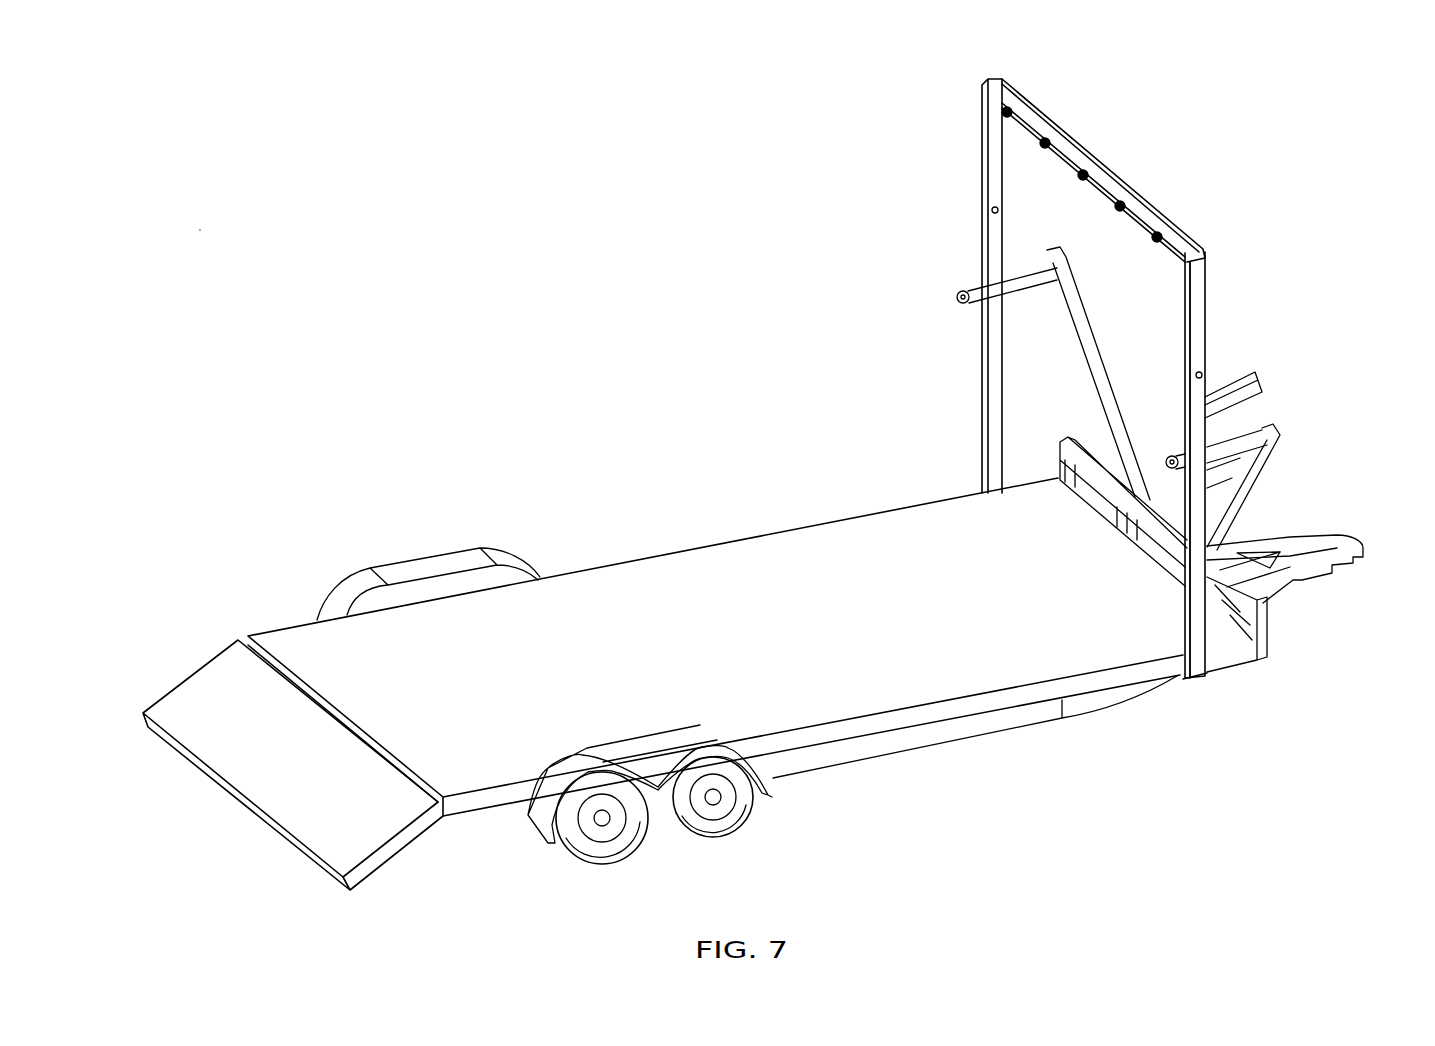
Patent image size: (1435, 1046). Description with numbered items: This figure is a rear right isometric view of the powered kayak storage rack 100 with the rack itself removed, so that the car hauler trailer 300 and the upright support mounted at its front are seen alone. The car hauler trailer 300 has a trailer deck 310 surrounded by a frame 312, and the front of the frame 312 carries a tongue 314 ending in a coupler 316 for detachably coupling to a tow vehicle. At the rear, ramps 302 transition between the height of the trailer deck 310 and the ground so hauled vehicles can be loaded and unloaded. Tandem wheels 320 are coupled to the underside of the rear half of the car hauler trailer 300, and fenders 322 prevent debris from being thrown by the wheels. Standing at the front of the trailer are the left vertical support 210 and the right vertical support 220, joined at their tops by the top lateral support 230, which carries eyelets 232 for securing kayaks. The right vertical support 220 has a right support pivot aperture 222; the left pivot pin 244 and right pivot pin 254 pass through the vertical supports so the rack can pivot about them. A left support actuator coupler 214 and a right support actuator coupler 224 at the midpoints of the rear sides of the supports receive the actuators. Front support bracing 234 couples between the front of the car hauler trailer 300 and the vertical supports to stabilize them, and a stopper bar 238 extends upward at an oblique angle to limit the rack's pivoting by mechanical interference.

The powered kayak storage rack 100 is at (203, 232).
The left vertical support 210 is at (987, 160).
The left support actuator coupler 214 is at (960, 302).
The right vertical support 220 is at (1203, 285).
The right support pivot aperture 222 is at (1198, 365).
The right support actuator coupler 224 is at (1168, 461).
The top lateral support 230 is at (1075, 145).
The eyelets 232 is at (1168, 230).
The front support bracing 234 is at (1270, 458).
The stopper bar 238 is at (1262, 384).
The left pivot pin 244 is at (993, 213).
The right pivot pin 254 is at (1203, 375).
The car hauler trailer 300 is at (630, 570).
The ramps 302 is at (250, 766).
The trailer deck 310 is at (745, 585).
The frame 312 is at (953, 741).
The tongue 314 is at (1268, 596).
The coupler 316 is at (1347, 557).
The tandem wheels 320 is at (700, 838).
The fenders 322 is at (430, 566).